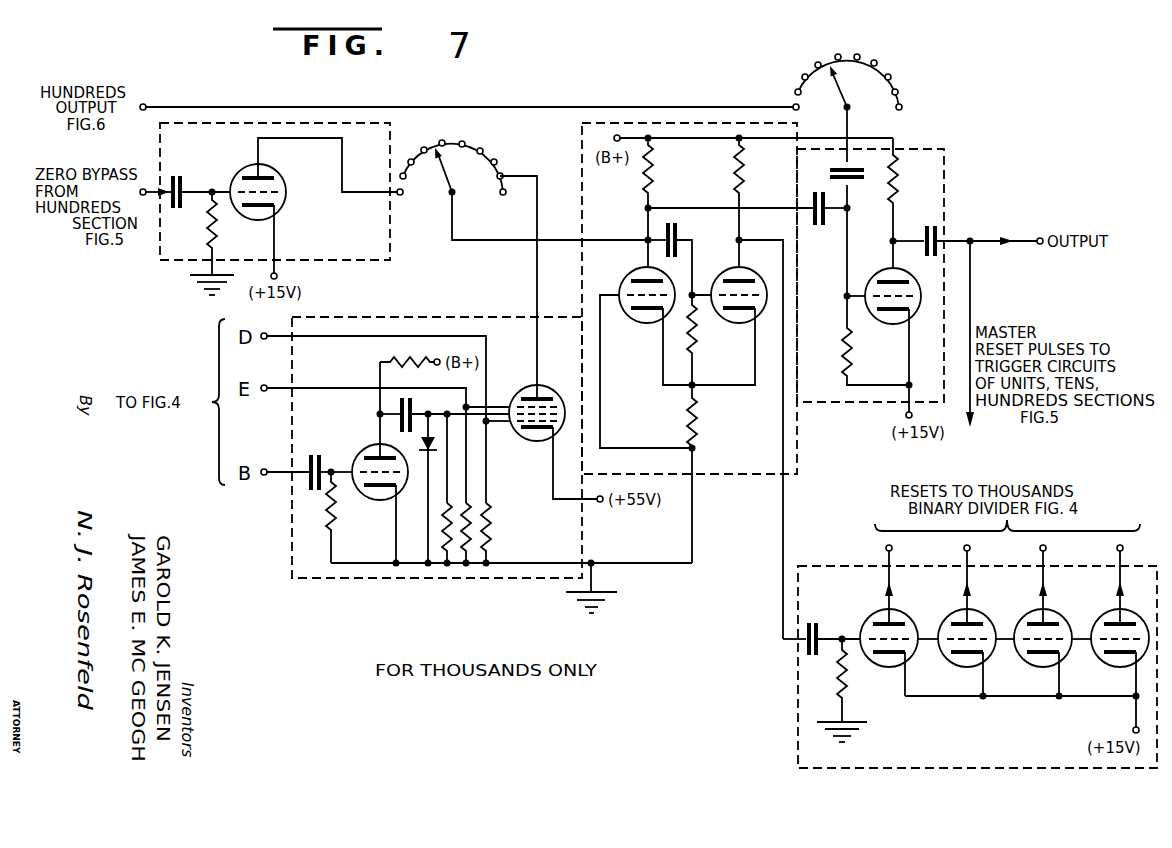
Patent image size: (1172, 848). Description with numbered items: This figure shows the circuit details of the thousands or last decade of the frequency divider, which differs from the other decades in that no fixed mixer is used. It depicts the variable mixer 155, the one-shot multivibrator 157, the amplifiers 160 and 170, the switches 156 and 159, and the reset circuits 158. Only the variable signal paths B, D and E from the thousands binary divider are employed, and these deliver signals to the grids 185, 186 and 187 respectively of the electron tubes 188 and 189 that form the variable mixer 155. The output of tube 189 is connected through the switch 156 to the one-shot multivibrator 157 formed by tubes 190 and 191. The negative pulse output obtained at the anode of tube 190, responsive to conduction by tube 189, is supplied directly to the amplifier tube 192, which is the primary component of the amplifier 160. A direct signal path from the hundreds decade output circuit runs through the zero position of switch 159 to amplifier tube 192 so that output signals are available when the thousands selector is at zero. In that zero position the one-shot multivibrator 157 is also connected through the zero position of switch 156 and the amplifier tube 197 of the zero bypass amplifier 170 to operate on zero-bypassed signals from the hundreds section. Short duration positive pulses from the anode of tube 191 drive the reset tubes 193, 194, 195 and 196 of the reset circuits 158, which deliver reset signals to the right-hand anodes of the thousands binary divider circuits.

The amplifier tube 197 is at (237, 176).
The amplifier 170 is at (275, 191).
The switch 156 is at (470, 163).
The switch 159 is at (866, 83).
The electron tube 190 is at (621, 281).
The electron tube 191 is at (713, 282).
The amplifier tube 192 is at (869, 280).
The amplifier 160 is at (838, 408).
The grid 187 is at (512, 401).
The electron tube 189 is at (561, 401).
The grid 186 is at (511, 431).
The grid 185 is at (356, 460).
The electron tube 188 is at (362, 494).
The variable mixer 155 is at (515, 583).
The one-shot multivibrator 157 is at (736, 480).
The reset tube 193 is at (865, 617).
The reset tube 194 is at (943, 617).
The reset tube 195 is at (1019, 617).
The reset tube 196 is at (1097, 617).
The reset circuits 158 is at (977, 667).